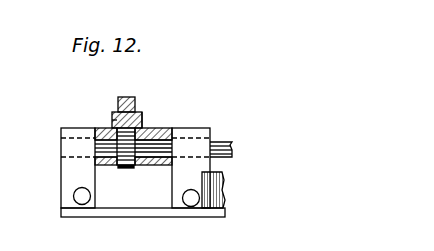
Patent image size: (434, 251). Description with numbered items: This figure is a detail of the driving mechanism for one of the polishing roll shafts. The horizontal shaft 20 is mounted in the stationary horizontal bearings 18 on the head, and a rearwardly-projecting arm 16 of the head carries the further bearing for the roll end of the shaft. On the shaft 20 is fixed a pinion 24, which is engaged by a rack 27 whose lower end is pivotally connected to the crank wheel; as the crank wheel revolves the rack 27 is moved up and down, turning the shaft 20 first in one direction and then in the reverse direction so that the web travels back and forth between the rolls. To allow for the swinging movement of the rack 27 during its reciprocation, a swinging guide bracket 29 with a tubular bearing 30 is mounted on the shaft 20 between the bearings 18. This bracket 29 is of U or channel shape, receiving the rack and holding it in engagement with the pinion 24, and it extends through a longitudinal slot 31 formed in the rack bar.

The rearwardly-projecting arm 16 is at (160, 211).
The horizontal bearing 18 is at (71, 173).
The horizontal shaft 20 is at (165, 130).
The pinion 24 is at (126, 168).
The rack 27 is at (128, 97).
The swinging guide bracket 29 is at (113, 116).
The tubular bearing 30 is at (160, 140).
The longitudinal slot 31 is at (134, 114).